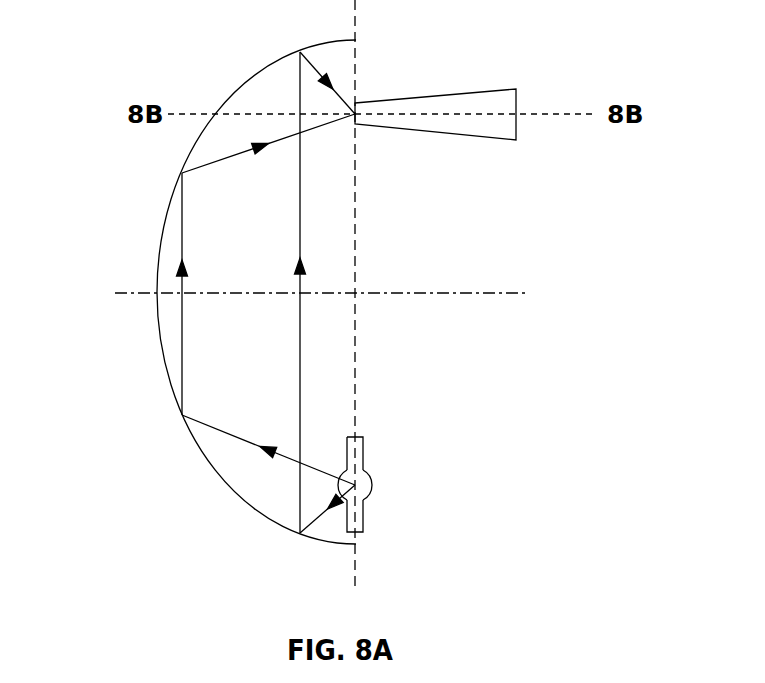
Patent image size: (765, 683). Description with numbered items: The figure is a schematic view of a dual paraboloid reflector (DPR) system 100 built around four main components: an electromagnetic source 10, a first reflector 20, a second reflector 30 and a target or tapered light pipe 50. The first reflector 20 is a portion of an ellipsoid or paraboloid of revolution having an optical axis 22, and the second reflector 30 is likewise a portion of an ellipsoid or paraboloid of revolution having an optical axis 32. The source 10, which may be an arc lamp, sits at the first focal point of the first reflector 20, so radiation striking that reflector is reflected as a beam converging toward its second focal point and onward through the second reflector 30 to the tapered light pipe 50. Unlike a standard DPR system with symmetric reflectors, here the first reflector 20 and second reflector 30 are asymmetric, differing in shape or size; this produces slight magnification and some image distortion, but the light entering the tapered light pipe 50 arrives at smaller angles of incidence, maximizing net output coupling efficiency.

The electromagnetic source 10 is at (372, 485).
The first reflector 20 is at (230, 505).
The optical axis 22 is at (418, 295).
The second reflector 30 is at (242, 67).
The optical axis 32 is at (355, 12).
The tapered light pipe 50 is at (503, 88).
The dual paraboloid reflector system 100 is at (204, 287).